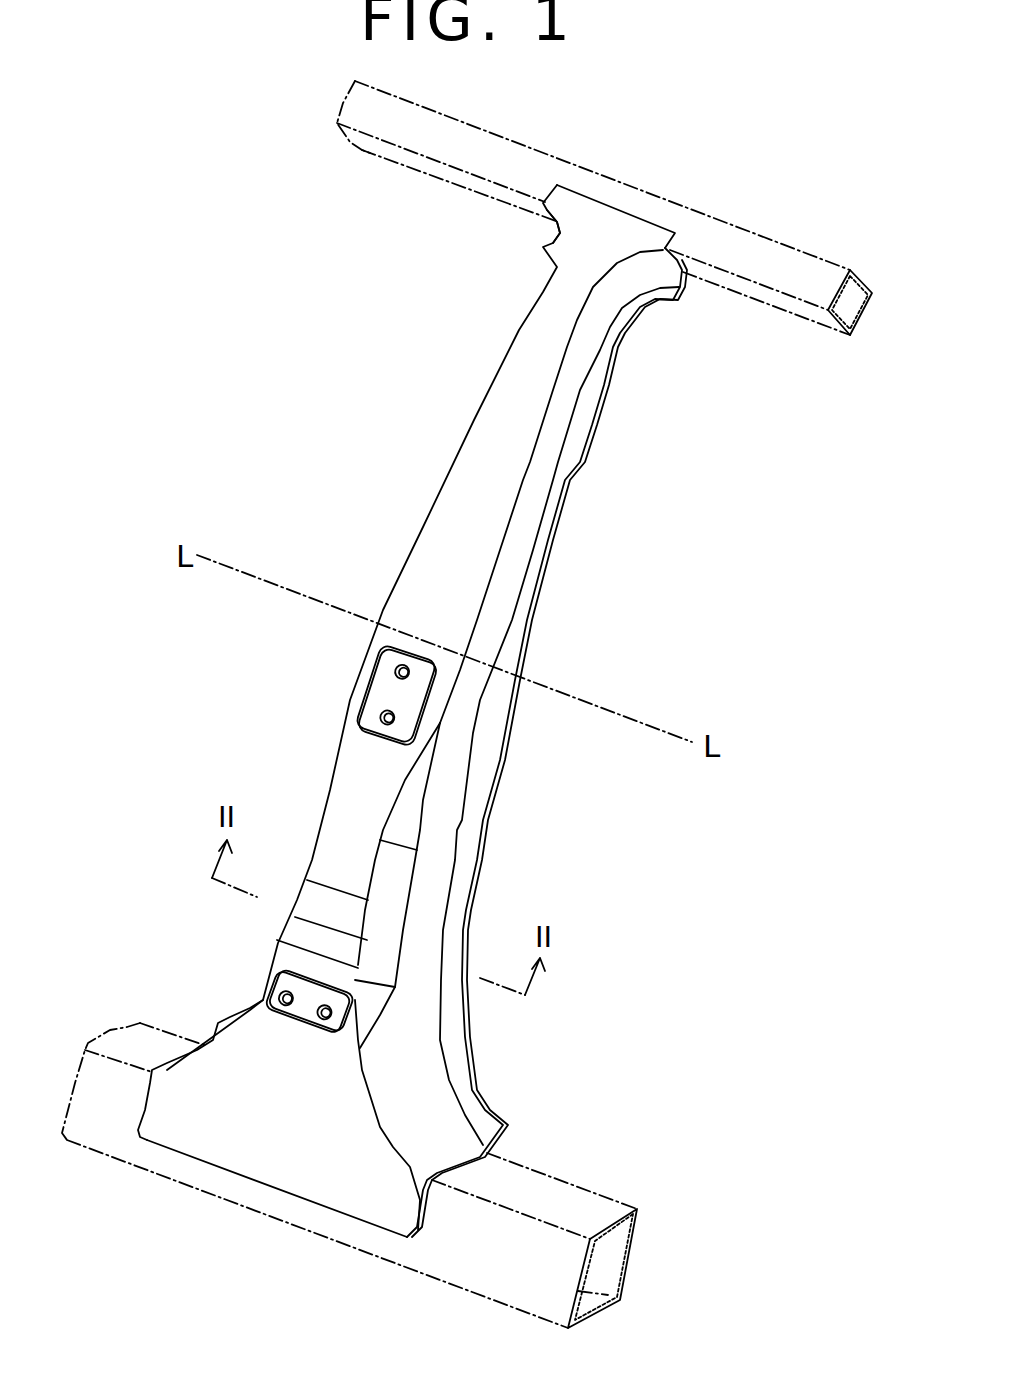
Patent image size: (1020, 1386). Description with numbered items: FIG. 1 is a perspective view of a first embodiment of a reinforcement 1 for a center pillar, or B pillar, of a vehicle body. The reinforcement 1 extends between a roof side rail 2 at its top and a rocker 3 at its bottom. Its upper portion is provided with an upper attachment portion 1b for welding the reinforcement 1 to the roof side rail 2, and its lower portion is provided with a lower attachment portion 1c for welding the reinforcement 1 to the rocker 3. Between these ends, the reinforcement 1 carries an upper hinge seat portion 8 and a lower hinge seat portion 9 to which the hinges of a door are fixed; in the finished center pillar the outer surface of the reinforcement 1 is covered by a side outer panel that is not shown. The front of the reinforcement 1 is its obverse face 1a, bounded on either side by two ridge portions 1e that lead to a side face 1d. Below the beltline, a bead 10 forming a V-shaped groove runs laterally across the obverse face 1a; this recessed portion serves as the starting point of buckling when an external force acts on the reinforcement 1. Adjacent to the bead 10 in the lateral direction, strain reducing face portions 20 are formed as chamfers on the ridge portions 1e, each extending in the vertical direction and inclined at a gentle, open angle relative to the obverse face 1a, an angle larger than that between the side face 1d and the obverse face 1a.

The reinforcement 1 is at (438, 689).
The obverse face 1a is at (490, 423).
The upper attachment portion 1b is at (690, 262).
The lower attachment portion 1c is at (470, 1168).
The side face 1d is at (543, 222).
The ridge portions 1e is at (420, 527).
The roof side rail 2 is at (797, 247).
The rocker 3 is at (633, 1257).
The upper hinge seat portion 8 is at (380, 688).
The lower hinge seat portion 9 is at (292, 1012).
The bead 10 is at (312, 920).
The strain reducing face portions 20 is at (392, 918).